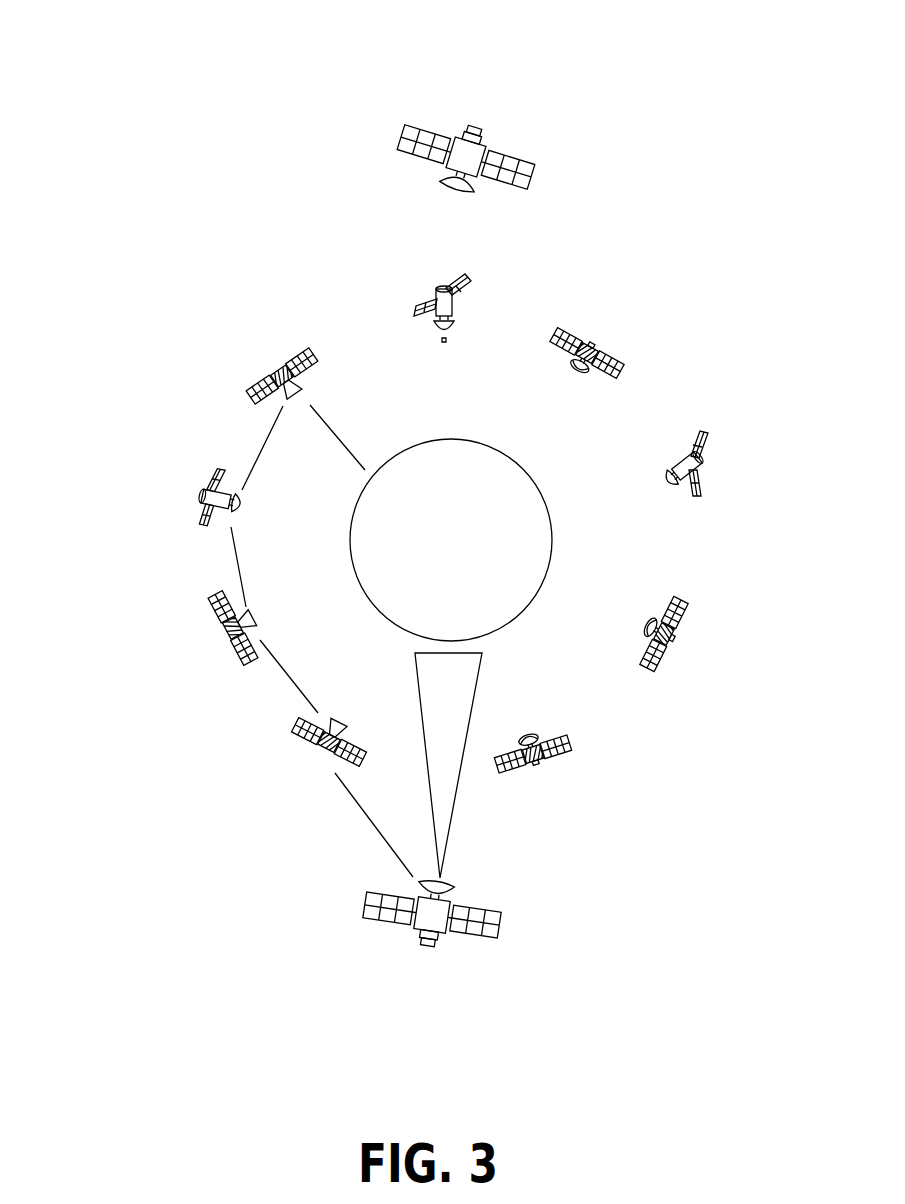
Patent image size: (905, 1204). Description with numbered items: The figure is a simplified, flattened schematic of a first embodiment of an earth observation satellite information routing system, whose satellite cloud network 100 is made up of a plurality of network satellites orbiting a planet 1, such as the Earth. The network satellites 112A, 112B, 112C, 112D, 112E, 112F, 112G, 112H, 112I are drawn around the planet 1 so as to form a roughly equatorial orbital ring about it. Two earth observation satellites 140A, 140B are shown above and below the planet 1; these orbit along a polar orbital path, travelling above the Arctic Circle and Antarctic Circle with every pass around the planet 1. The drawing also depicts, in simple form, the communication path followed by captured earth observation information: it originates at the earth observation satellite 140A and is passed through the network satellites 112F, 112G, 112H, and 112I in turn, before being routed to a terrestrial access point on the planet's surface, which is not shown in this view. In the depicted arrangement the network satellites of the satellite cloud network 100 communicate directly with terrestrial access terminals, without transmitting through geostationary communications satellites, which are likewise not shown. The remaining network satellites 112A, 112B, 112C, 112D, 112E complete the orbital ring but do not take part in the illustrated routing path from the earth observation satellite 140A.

The satellite cloud network 100 is at (165, 66).
The planet 1 is at (456, 547).
The earth observation satellite 140A is at (437, 923).
The earth observation satellite 140B is at (462, 156).
The network satellite 112A is at (455, 312).
The network satellite 112B is at (600, 352).
The network satellite 112C is at (707, 462).
The network satellite 112D is at (678, 630).
The network satellite 112E is at (548, 757).
The network satellite 112F is at (320, 752).
The network satellite 112G is at (226, 628).
The network satellite 112H is at (200, 498).
The network satellite 112I is at (270, 378).